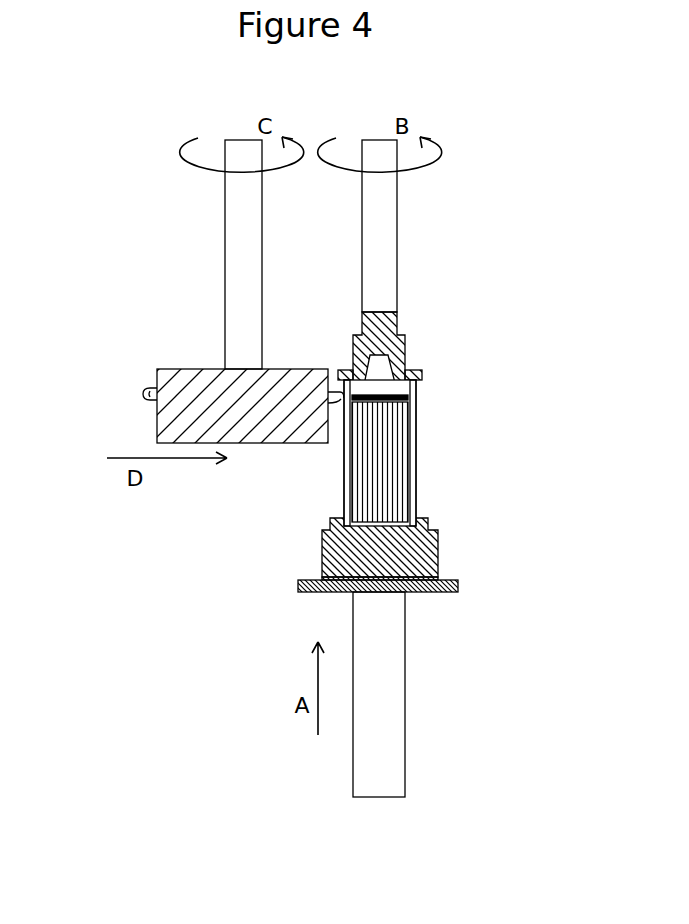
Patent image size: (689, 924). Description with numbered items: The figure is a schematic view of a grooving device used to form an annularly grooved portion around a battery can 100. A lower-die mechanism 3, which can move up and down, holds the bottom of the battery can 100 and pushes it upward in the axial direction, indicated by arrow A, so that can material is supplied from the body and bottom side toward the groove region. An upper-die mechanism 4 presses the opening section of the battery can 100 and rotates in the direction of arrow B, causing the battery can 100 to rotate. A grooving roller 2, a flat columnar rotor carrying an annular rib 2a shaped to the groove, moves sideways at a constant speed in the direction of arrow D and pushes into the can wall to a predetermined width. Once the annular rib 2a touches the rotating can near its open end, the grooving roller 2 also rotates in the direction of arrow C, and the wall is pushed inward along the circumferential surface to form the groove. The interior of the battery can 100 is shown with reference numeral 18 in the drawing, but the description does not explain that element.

The grooving roller 2 is at (193, 387).
The annular rib 2a is at (153, 393).
The upper-die mechanism 4 is at (405, 343).
The filling material 18 is at (385, 443).
The battery can 100 is at (417, 492).
The lower-die mechanism 3 is at (342, 539).